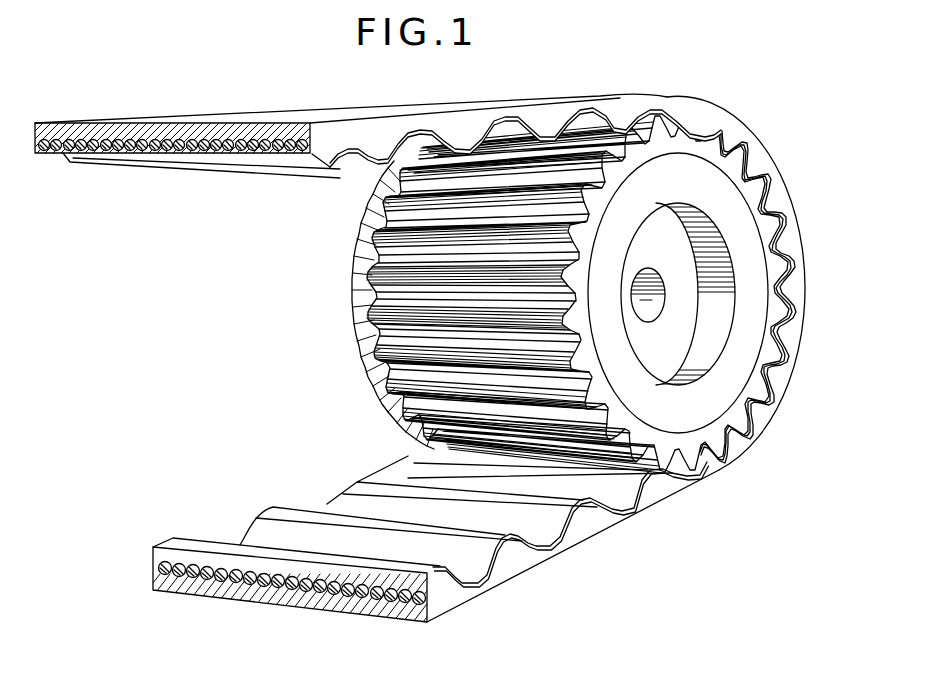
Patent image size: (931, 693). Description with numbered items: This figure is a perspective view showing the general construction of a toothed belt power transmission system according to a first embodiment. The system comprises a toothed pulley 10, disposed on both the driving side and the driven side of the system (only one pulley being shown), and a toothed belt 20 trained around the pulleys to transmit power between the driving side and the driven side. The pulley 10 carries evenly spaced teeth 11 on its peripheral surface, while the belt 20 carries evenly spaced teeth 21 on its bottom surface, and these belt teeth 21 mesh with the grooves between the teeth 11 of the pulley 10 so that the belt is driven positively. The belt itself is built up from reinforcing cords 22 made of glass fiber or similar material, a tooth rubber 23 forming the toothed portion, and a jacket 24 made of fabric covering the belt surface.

The toothed pulley 10 is at (330, 273).
The teeth 11 is at (780, 314).
The toothed belt 20 is at (292, 501).
The teeth 21 is at (783, 347).
The reinforcing cords 22 is at (340, 592).
The tooth rubber 23 is at (433, 592).
The jacket 24 is at (597, 505).